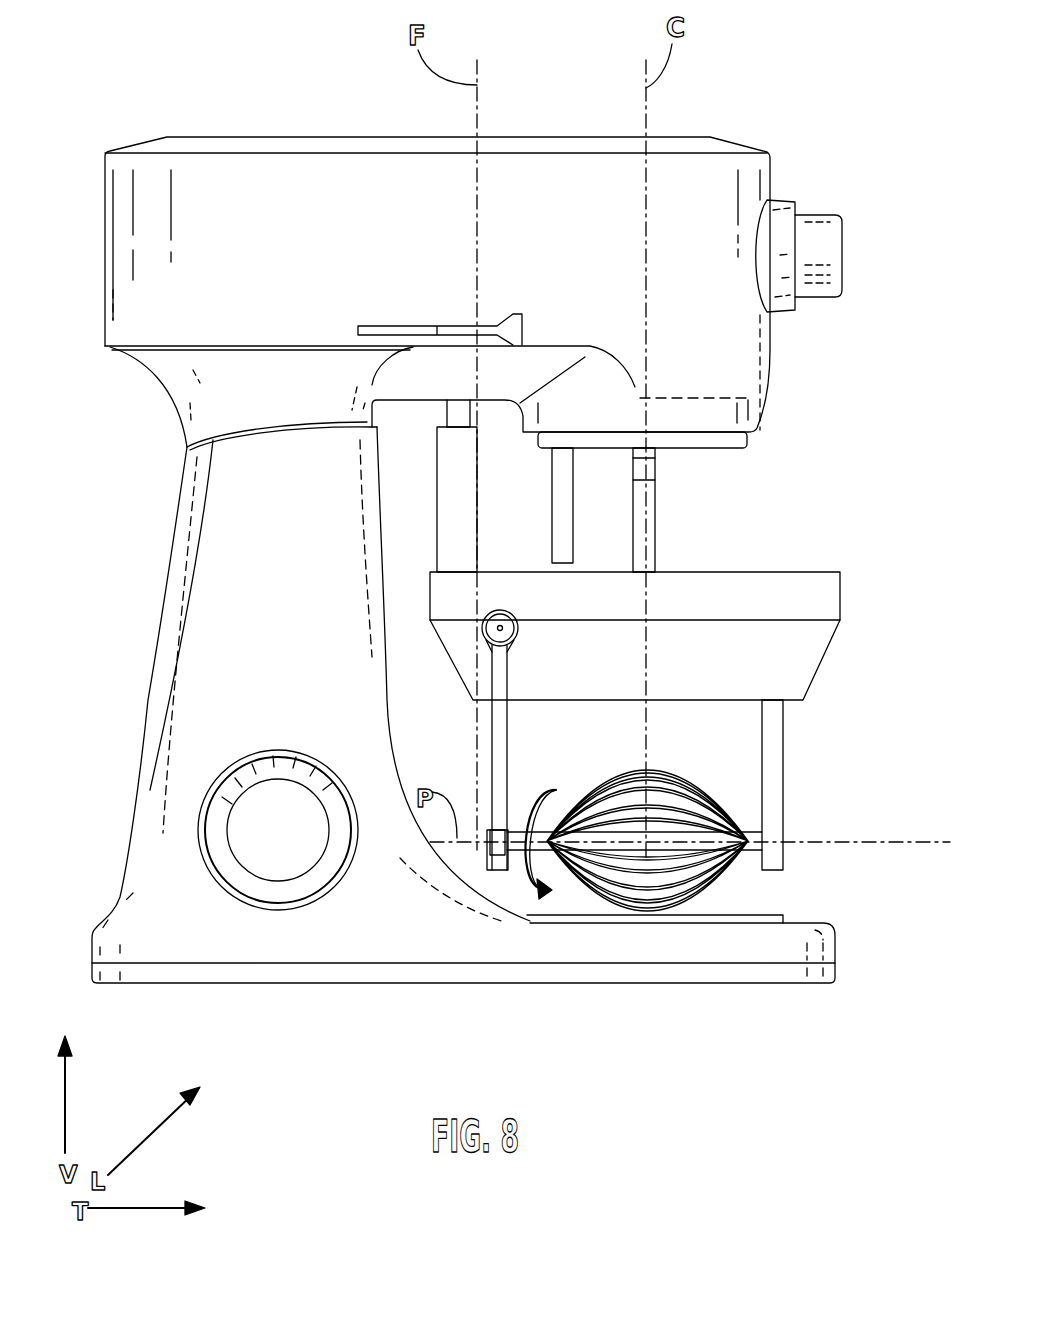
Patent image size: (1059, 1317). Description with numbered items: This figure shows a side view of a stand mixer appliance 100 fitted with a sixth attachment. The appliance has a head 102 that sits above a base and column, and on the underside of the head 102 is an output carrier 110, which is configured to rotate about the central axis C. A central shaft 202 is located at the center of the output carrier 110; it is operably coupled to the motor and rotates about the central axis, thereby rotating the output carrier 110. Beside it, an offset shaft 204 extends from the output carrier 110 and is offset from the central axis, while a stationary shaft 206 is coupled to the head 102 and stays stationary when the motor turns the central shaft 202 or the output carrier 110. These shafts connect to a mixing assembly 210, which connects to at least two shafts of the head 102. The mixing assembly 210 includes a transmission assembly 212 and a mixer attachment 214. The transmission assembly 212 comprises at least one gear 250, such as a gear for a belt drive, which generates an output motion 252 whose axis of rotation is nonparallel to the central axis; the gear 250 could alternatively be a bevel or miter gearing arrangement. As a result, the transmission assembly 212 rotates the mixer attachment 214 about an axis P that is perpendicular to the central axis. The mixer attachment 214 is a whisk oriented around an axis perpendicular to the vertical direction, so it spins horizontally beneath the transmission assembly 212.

The stand mixer appliance 100 is at (150, 72).
The head 102 is at (287, 137).
The output carrier 110 is at (763, 442).
The central shaft 202 is at (660, 478).
The offset shaft 204 is at (552, 512).
The stationary shaft 206 is at (447, 407).
The mixing assembly 210 is at (689, 684).
The transmission assembly 212 is at (840, 590).
The mixer attachment 214 is at (588, 893).
The gear 250 is at (494, 643).
The output motion 252 is at (531, 893).